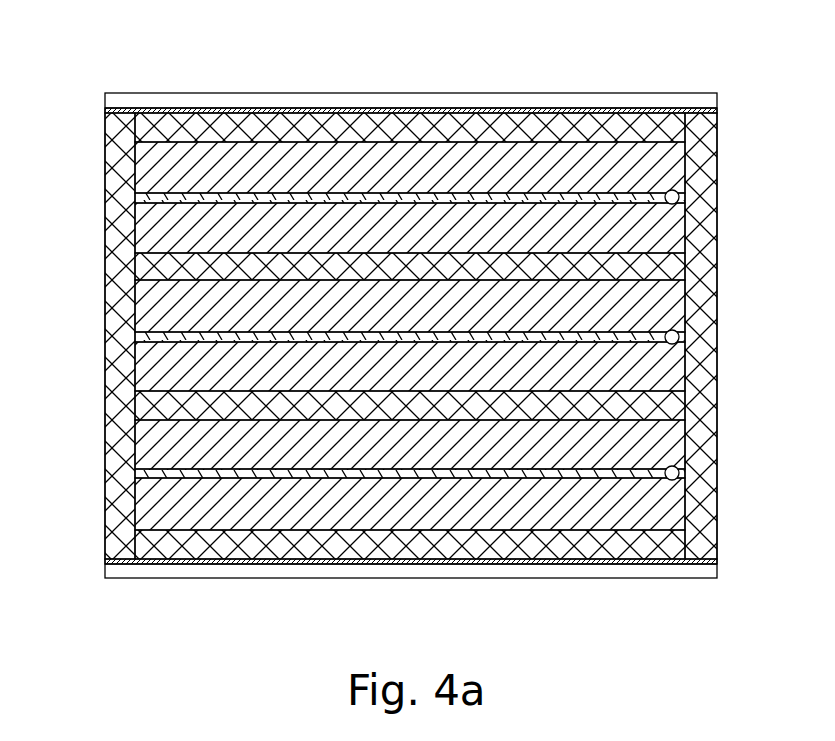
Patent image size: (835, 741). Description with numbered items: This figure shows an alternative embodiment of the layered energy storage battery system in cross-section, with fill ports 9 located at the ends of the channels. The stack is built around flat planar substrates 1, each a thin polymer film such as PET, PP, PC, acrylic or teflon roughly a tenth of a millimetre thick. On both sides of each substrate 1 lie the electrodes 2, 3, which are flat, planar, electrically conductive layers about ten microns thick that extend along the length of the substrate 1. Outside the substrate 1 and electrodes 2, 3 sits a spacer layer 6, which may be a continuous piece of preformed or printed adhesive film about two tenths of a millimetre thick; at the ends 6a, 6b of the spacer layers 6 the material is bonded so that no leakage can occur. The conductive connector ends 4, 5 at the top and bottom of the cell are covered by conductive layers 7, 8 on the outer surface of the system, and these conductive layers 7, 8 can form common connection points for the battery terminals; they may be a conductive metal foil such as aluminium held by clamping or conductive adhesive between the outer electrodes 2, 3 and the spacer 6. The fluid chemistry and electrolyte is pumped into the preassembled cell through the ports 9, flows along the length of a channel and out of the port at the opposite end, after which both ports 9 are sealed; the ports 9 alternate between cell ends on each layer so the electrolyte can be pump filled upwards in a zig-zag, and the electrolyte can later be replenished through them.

The substrate 1 is at (155, 197).
The electrode 2 is at (660, 167).
The electrode 3 is at (660, 228).
The conductive connector end 4 is at (104, 110).
The conductive connector end 5 is at (105, 563).
The spacer layer 6 is at (170, 126).
The end of spacer layer 6a is at (107, 444).
The end of spacer layer 6b is at (697, 336).
The conductive layer 7 is at (165, 92).
The conductive layer 8 is at (242, 579).
The fill port 9 is at (680, 197).